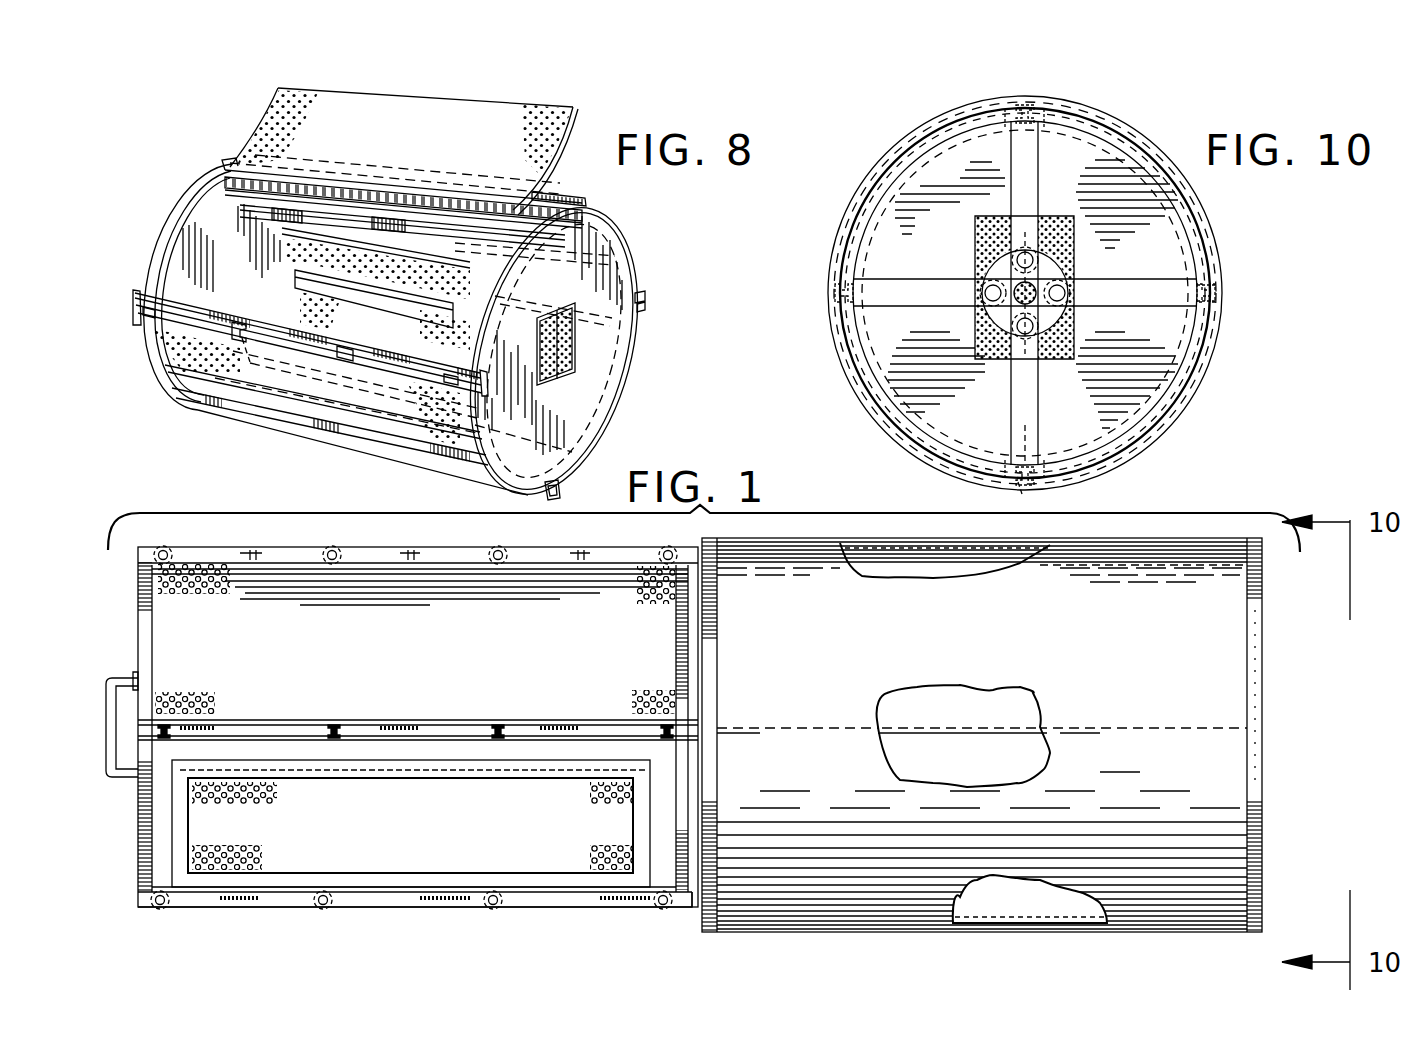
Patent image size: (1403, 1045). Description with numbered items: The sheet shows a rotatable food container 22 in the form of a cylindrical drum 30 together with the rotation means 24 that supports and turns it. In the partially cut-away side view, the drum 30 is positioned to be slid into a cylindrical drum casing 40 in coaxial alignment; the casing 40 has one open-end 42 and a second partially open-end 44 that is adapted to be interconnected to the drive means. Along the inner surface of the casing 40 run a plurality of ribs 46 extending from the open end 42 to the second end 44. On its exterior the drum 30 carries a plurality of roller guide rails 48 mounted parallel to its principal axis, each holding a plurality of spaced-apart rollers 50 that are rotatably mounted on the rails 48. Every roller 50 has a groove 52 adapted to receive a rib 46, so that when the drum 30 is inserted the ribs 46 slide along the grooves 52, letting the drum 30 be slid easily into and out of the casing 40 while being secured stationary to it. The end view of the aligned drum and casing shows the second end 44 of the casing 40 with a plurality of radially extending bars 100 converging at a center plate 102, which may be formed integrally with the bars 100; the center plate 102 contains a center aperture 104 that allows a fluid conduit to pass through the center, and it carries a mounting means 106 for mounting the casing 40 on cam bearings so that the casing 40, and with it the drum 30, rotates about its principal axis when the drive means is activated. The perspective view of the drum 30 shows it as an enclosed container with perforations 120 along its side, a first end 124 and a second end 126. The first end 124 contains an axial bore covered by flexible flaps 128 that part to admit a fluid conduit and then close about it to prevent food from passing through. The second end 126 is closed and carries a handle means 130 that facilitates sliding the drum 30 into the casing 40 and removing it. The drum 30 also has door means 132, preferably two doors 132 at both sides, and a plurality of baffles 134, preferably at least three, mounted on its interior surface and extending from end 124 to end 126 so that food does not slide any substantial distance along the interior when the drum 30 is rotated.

In FIG. 8, the rotable food container 22 is at (612, 383).
In FIG. 1, the rotable food container 22 is at (222, 660).
In FIG. 1, the rotation means 24 is at (1160, 625).
In FIG. 8, the cylindrical drum 30 is at (600, 412).
In FIG. 10, the cylindrical drum 30 is at (1160, 252).
In FIG. 1, the cylindrical drum 30 is at (200, 617).
In FIG. 10, the drum casing 40 is at (1160, 437).
In FIG. 1, the drum casing 40 is at (1170, 688).
In FIG. 1, the open-end 42 is at (700, 835).
In FIG. 10, the second partially open-end 44 is at (1205, 365).
In FIG. 1, the second partially open-end 44 is at (1262, 712).
In FIG. 10, the ribs 46 is at (1215, 294).
In FIG. 1, the ribs 46 is at (968, 565).
In FIG. 8, the roller guide rails 48 is at (200, 338).
In FIG. 1, the roller guide rails 48 is at (178, 738).
In FIG. 8, the rollers 50 is at (237, 330).
In FIG. 10, the rollers 50 is at (1020, 448).
In FIG. 1, the rollers 50 is at (500, 548).
In FIG. 8, the groove 52 is at (250, 332).
In FIG. 10, the groove 52 is at (1022, 494).
In FIG. 1, the groove 52 is at (334, 725).
In FIG. 10, the radially extending bars 100 is at (1000, 172).
In FIG. 10, the center plate 102 is at (1018, 298).
In FIG. 10, the center aperture 104 is at (1014, 332).
In FIG. 10, the mounting means 106 is at (987, 296).
In FIG. 8, the perforations 120 is at (548, 112).
In FIG. 1, the perforations 120 is at (185, 570).
In FIG. 8, the first end 124 is at (628, 268).
In FIG. 10, the first end 124 is at (1100, 200).
In FIG. 1, the first end 124 is at (690, 588).
In FIG. 8, the second end 126 is at (185, 200).
In FIG. 1, the second end 126 is at (138, 880).
In FIG. 8, the flexible flaps 128 is at (575, 350).
In FIG. 10, the flexible flaps 128 is at (1050, 225).
In FIG. 1, the handle means 130 is at (108, 770).
In FIG. 8, the door means 132 is at (430, 100).
In FIG. 1, the door means 132 is at (367, 840).
In FIG. 8, the baffles 134 is at (556, 474).